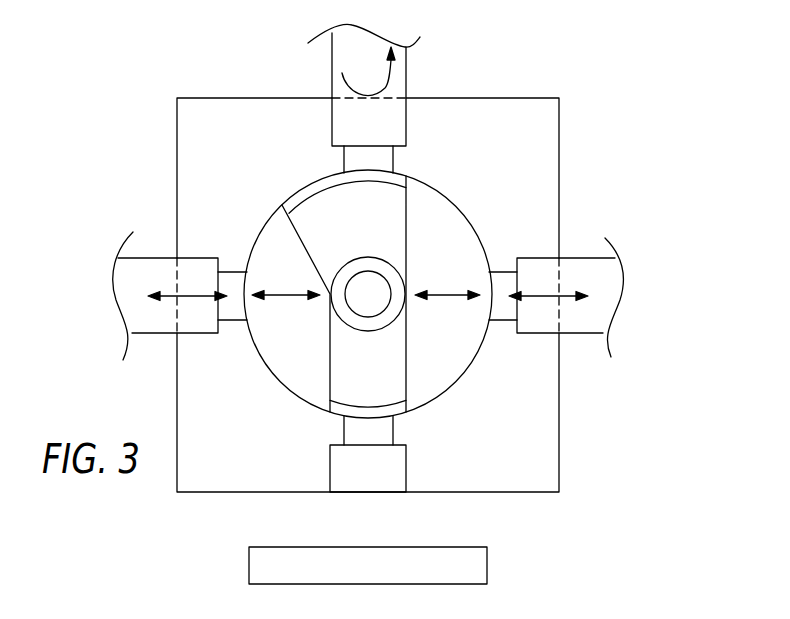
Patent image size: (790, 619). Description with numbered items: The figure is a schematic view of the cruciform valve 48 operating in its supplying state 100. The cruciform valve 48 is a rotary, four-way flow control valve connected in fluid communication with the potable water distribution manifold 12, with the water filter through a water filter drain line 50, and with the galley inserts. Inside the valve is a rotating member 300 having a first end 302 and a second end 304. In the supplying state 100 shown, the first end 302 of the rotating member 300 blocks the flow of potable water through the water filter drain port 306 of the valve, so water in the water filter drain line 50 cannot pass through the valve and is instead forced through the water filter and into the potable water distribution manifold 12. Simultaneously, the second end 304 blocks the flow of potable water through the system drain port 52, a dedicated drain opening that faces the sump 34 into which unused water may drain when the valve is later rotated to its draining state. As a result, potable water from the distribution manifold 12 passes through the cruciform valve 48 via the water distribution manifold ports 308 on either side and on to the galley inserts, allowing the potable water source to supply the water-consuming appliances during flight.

The supplying state 100 is at (600, 130).
The potable water distribution manifold 12 is at (157, 268).
The sump 34 is at (470, 565).
The cruciform valve 48 is at (214, 98).
The water filter drain line 50 is at (343, 62).
The system drain port 52 is at (388, 470).
The rotating member 300 is at (395, 284).
The first end 302 is at (302, 198).
The second end 304 is at (339, 408).
The water filter drain port 306 is at (392, 137).
The water distribution manifold ports 308 is at (195, 316).